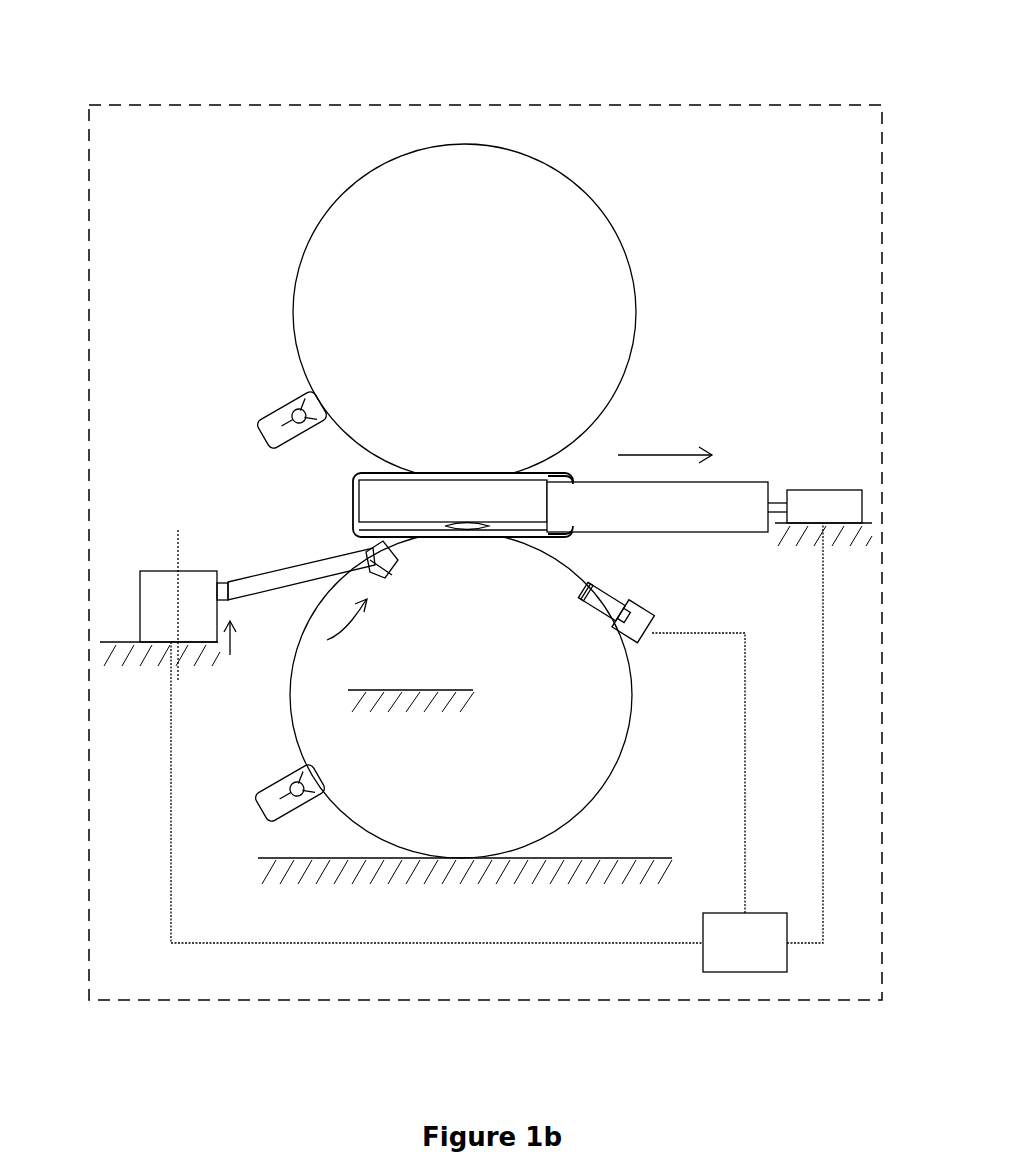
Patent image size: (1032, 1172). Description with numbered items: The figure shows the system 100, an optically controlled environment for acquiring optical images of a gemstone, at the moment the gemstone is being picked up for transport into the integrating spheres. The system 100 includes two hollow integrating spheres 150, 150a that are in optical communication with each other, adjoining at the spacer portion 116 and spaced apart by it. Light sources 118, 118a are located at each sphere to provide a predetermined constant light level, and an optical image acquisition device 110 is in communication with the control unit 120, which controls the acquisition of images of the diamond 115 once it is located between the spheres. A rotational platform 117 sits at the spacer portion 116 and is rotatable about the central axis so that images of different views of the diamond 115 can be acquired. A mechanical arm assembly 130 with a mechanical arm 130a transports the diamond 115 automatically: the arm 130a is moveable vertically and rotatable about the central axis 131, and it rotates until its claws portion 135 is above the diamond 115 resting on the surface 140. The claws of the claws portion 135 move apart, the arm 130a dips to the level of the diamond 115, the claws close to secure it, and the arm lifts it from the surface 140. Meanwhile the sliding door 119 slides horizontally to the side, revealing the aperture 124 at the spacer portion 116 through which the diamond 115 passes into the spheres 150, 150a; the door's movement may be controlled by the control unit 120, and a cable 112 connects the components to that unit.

The system 100 is at (152, 88).
The optical image acquisition device 110 is at (650, 612).
The cable 112 is at (745, 755).
The diamond 115 is at (368, 553).
The spacer portion 116 is at (562, 476).
The rotational platform 117 is at (548, 537).
The light source 118 is at (263, 421).
The light source 118a is at (250, 802).
The sliding door 119 is at (637, 482).
The control unit 120 is at (787, 955).
The aperture 124 is at (380, 503).
The mechanical arm assembly 130 is at (165, 615).
The mechanical arm 130a is at (250, 576).
The central axis 131 is at (178, 598).
The claws portion 135 is at (383, 570).
The surface 140 is at (374, 691).
The integrating sphere 150 is at (632, 350).
The integrating sphere 150a is at (628, 745).